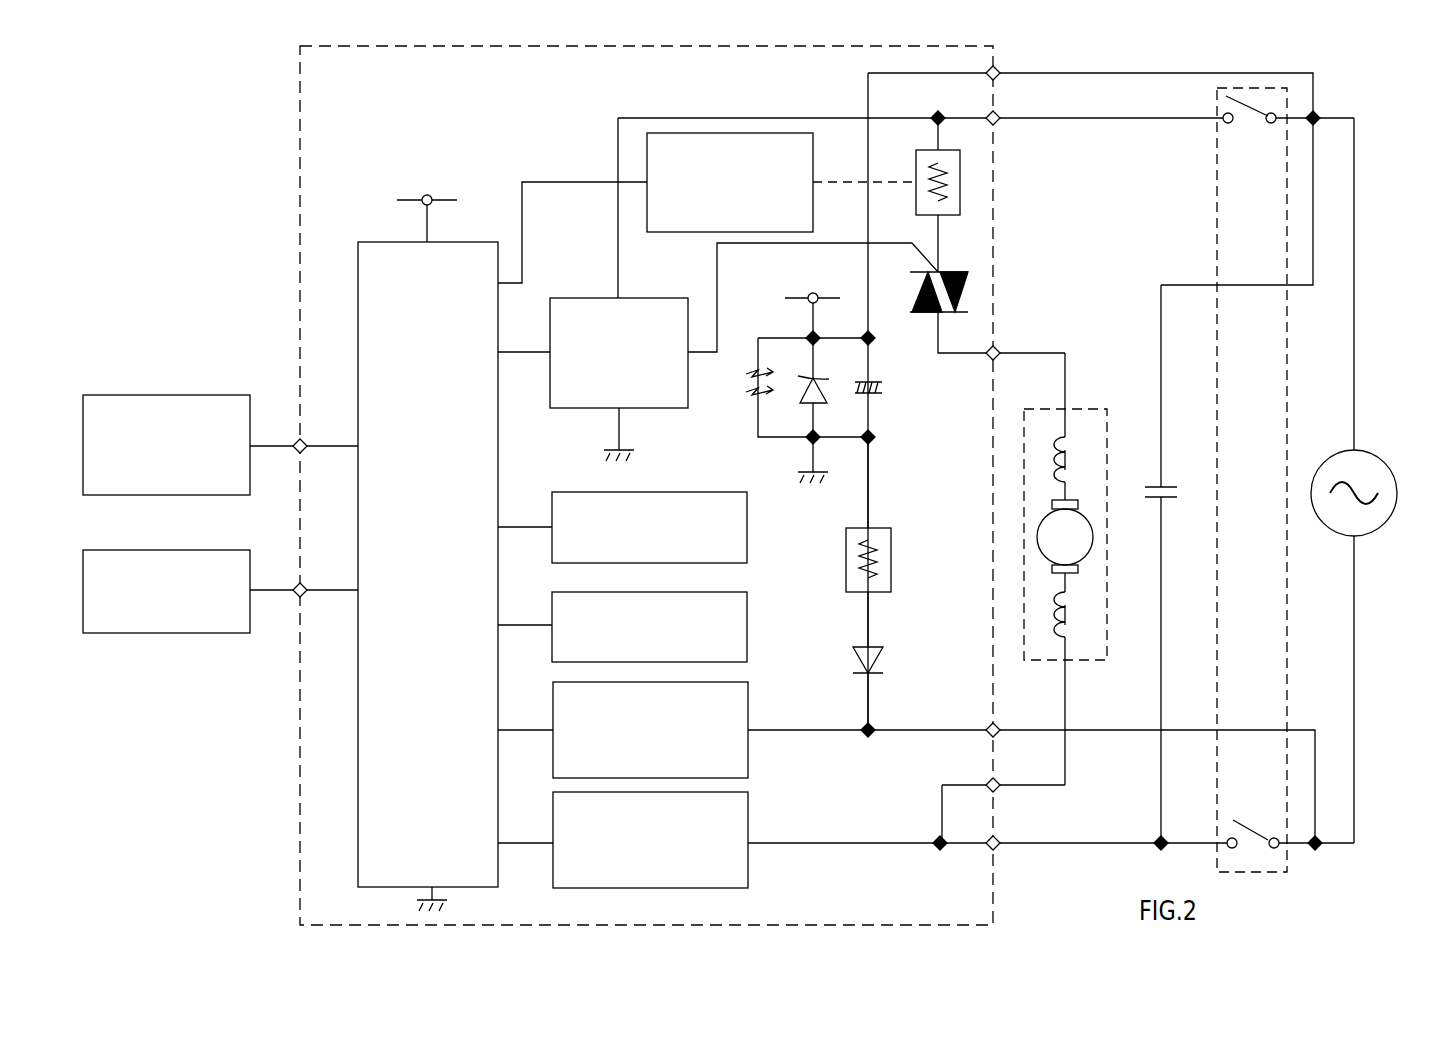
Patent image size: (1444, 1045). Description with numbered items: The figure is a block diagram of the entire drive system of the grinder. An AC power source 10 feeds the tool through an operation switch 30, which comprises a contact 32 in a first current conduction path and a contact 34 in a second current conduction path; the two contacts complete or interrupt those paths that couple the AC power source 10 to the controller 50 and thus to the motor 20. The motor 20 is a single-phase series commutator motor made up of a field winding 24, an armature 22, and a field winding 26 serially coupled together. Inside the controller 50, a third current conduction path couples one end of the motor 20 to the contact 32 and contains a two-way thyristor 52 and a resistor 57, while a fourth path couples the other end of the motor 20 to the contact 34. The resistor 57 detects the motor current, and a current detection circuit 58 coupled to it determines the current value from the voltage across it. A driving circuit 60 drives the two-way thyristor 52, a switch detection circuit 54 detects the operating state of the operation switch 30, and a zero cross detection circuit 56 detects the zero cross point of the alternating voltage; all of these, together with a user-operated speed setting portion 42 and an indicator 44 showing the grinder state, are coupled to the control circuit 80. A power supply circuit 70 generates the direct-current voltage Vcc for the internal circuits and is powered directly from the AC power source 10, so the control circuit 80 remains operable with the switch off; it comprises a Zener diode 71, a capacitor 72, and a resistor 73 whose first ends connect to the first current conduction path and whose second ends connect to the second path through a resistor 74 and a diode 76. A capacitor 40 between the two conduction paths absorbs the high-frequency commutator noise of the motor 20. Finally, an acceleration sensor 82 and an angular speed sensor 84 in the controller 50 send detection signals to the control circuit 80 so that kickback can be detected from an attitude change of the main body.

The AC power source 10 is at (1385, 463).
The motor 20 is at (1085, 569).
The armature 22 is at (1093, 540).
The field winding 24 is at (1070, 455).
The field winding 26 is at (1072, 612).
The operation switch 30 is at (1276, 480).
The contact 32 is at (1250, 124).
The contact 34 is at (1262, 818).
The capacitor 40 is at (1147, 499).
The speed setting portion 42 is at (205, 393).
The indicator 44 is at (205, 548).
The controller 50 is at (300, 87).
The two-way thyristor 52 is at (962, 292).
The switch detection circuit 54 is at (748, 812).
The zero cross detection circuit 56 is at (748, 702).
The resistor 57 is at (960, 181).
The current detection circuit 58 is at (818, 163).
The driving circuit 60 is at (655, 298).
The power supply circuit 70 is at (827, 398).
The Zener diode 71 is at (800, 395).
The capacitor 72 is at (884, 389).
The resistor 73 is at (757, 393).
The resistor 74 is at (876, 530).
The diode 76 is at (886, 667).
The control circuit 80 is at (433, 242).
The acceleration sensor 82 is at (685, 492).
The angular speed sensor 84 is at (685, 592).